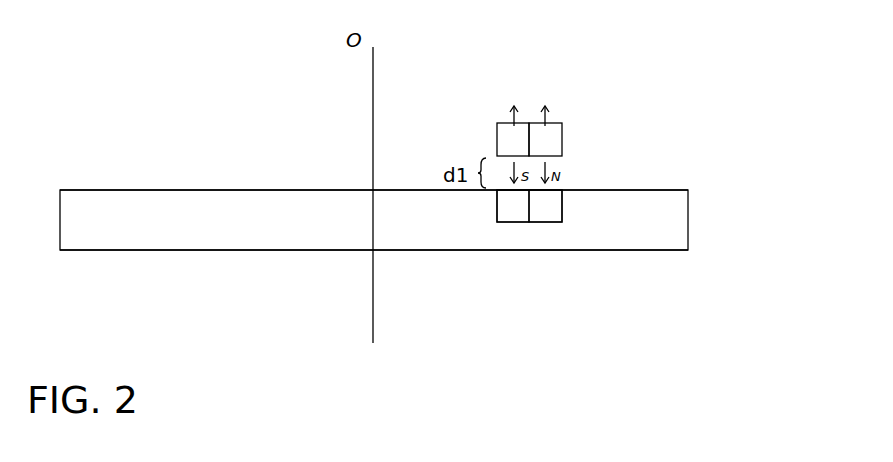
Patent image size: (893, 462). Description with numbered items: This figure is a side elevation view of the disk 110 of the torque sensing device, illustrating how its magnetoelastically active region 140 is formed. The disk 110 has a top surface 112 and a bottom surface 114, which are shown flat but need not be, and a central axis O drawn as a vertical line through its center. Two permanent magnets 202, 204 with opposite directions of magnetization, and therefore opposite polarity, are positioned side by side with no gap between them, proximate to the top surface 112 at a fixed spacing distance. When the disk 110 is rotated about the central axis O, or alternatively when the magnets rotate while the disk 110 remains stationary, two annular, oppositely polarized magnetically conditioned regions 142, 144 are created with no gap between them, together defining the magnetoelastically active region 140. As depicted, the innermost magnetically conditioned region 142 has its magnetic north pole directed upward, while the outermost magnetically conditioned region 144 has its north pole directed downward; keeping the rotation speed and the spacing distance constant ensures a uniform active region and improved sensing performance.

The disk 110 is at (673, 222).
The top surface 112 is at (177, 189).
The bottom surface 114 is at (168, 250).
The magnetoelastically active region 140 is at (573, 207).
The innermost magnetically conditioned region 142 is at (511, 208).
The outermost magnetically conditioned region 144 is at (548, 208).
The permanent magnet 202 is at (510, 140).
The permanent magnet 204 is at (552, 139).